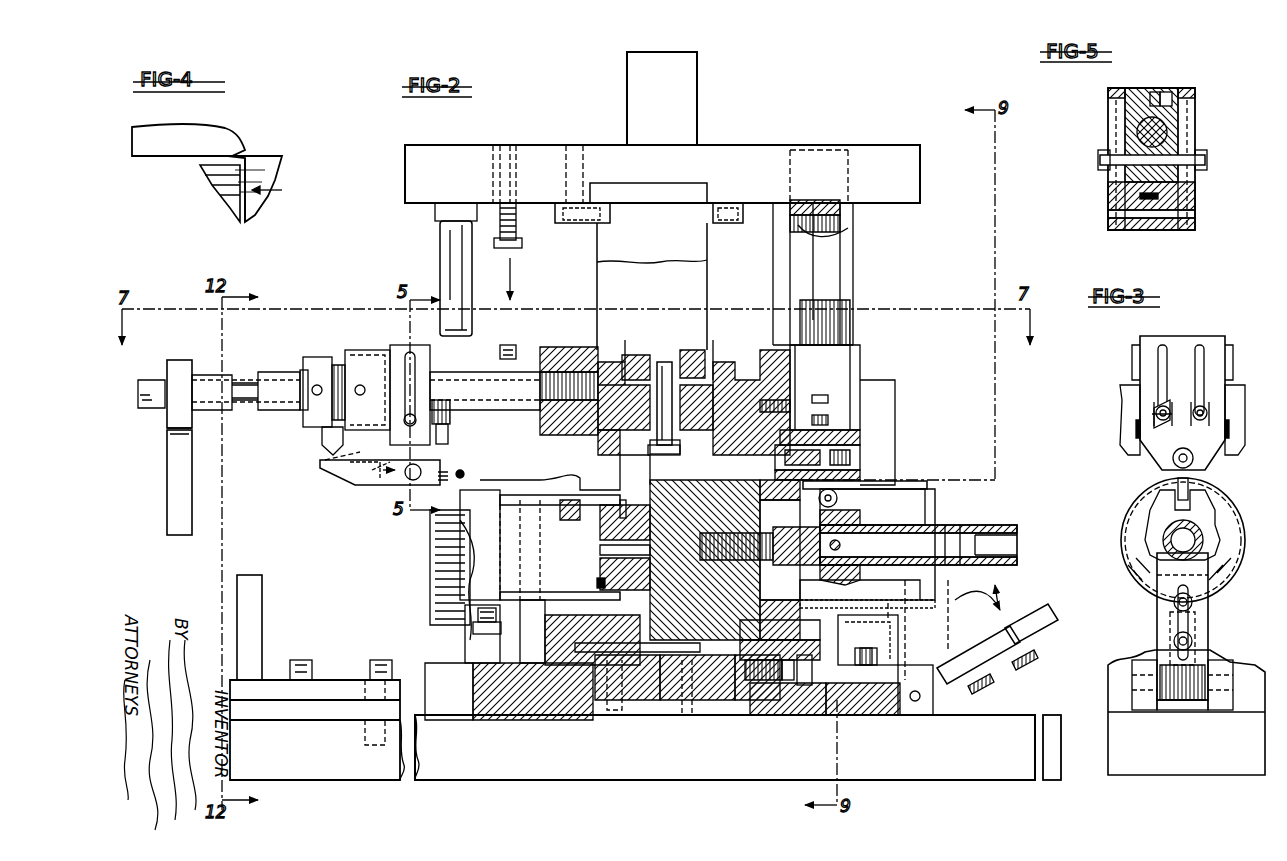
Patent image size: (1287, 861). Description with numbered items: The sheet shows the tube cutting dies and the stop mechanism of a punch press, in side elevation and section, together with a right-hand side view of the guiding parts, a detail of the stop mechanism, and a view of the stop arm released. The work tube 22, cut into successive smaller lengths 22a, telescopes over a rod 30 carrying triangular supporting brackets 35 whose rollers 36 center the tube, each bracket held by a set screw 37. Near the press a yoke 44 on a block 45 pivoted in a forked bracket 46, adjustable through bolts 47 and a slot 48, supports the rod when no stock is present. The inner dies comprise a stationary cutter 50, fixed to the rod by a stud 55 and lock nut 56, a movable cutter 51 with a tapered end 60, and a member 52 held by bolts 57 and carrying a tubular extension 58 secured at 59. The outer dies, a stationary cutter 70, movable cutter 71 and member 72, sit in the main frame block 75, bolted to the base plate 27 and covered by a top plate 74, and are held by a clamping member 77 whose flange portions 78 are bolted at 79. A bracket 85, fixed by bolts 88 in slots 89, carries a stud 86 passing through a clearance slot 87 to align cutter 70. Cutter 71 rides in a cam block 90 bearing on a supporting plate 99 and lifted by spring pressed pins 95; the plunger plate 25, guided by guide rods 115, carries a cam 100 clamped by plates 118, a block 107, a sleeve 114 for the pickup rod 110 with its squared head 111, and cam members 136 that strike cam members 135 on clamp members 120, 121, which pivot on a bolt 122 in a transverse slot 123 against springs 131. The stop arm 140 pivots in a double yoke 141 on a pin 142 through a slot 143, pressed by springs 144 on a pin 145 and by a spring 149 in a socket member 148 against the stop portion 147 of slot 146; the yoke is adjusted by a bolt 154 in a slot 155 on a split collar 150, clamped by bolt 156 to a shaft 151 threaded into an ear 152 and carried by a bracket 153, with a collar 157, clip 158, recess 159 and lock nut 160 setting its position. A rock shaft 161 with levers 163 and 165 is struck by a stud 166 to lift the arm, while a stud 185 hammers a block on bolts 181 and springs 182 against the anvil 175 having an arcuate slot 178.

In FIG. 3, the tube 22 is at (1125, 515).
In FIG. 2, the tube 22 is at (918, 482).
In FIG. 4, the smaller length 22a is at (262, 160).
In FIG. 2, the plate 25 is at (865, 145).
In FIG. 2, the base plate 27 is at (430, 782).
In FIG. 3, the rod 30 is at (1165, 540).
In FIG. 2, the rod 30 is at (1015, 525).
In FIG. 3, the supporting bracket 35 is at (1205, 500).
In FIG. 2, the supporting bracket 35 is at (850, 582).
In FIG. 3, the supporting roller 36 is at (1190, 487).
In FIG. 2, the supporting roller 36 is at (840, 500).
In FIG. 2, the set screw 37 is at (870, 515).
In FIG. 3, the yoke 44 is at (1208, 592).
In FIG. 2, the yoke 44 is at (945, 618).
In FIG. 3, the block 45 is at (1178, 710).
In FIG. 2, the block 45 is at (1020, 640).
In FIG. 3, the forked bracket 46 is at (1140, 705).
In FIG. 2, the forked bracket 46 is at (915, 718).
In FIG. 3, the bolt 47 is at (1192, 640).
In FIG. 2, the bolt 47 is at (1022, 672).
In FIG. 3, the slot 48 is at (1178, 612).
In FIG. 2, the stationary cutter 50 is at (770, 600).
In FIG. 2, the movable cutter 51 is at (600, 549).
In FIG. 2, the member 52 is at (600, 562).
In FIG. 2, the threaded bolt or stud 55 is at (740, 540).
In FIG. 2, the lock nut 56 is at (795, 568).
In FIG. 2, the elongated bolt 57 is at (597, 583).
In FIG. 4, the tubular extension 58 is at (215, 190).
In FIG. 2, the tubular extension 58 is at (515, 590).
In FIG. 2, the bolt 59 is at (618, 505).
In FIG. 2, the tapered end 60 is at (610, 488).
In FIG. 2, the stationary cutter 70 is at (690, 705).
In FIG. 2, the movable cutter 71 is at (640, 690).
In FIG. 2, the supporting member 72 is at (590, 655).
In FIG. 2, the top plate 74 is at (627, 340).
In FIG. 3, the main frame block 75 is at (1112, 680).
In FIG. 2, the main frame block 75 is at (742, 362).
In FIG. 2, the annular clamping member 77 is at (580, 458).
In FIG. 2, the flange portion 78 is at (522, 668).
In FIG. 2, the bolt 79 is at (470, 650).
In FIG. 3, the bracket 85 is at (1218, 340).
In FIG. 2, the bracket 85 is at (850, 438).
In FIG. 3, the threaded stud 86 is at (1173, 464).
In FIG. 2, the threaded stud 86 is at (860, 458).
In FIG. 2, the clearance slot 87 is at (775, 422).
In FIG. 3, the bolt 88 is at (1160, 405).
In FIG. 2, the bolt 88 is at (828, 420).
In FIG. 3, the slot 89 is at (1200, 350).
In FIG. 2, the slot 89 is at (805, 362).
In FIG. 2, the cam block 90 is at (608, 362).
In FIG. 2, the spring pressed pin 95 is at (687, 716).
In FIG. 2, the supporting plate 99 is at (742, 720).
In FIG. 2, the cam 100 is at (707, 270).
In FIG. 2, the block 107 is at (692, 350).
In FIG. 2, the rod 110 is at (660, 360).
In FIG. 2, the squared head 111 is at (683, 441).
In FIG. 2, the sleeve 114 is at (627, 93).
In FIG. 2, the guide rod 115 is at (843, 250).
In FIG. 2, the plate 118 is at (740, 205).
In FIG. 3, the clamp member 120 is at (1125, 410).
In FIG. 2, the clamp member 120 is at (780, 720).
In FIG. 3, the clamp member 121 is at (1240, 402).
In FIG. 2, the clamp member 121 is at (838, 745).
In FIG. 2, the bolt 122 is at (800, 688).
In FIG. 2, the transverse slot 123 is at (775, 690).
In FIG. 3, the spring 131 is at (1135, 430).
In FIG. 2, the cam member 135 is at (828, 397).
In FIG. 2, the cam member 136 is at (805, 270).
In FIG. 4, the stop arm 140 is at (213, 138).
In FIG. 5, the stop arm 140 is at (1158, 232).
In FIG. 2, the stop arm 140 is at (530, 505).
In FIG. 5, the double yoke 141 is at (1190, 190).
In FIG. 2, the double yoke 141 is at (370, 490).
In FIG. 5, the pin or bolt 142 is at (1195, 212).
In FIG. 2, the pin or bolt 142 is at (405, 480).
In FIG. 2, the slot 143 is at (395, 490).
In FIG. 2, the spring 144 is at (440, 482).
In FIG. 2, the pin 145 is at (462, 480).
In FIG. 5, the slot 146 is at (1140, 196).
In FIG. 2, the slot 146 is at (360, 478).
In FIG. 2, the stop portion 147 is at (340, 468).
In FIG. 2, the socket member 148 is at (450, 413).
In FIG. 2, the spring 149 is at (448, 431).
In FIG. 5, the split collar 150 is at (1178, 123).
In FIG. 2, the split collar 150 is at (487, 335).
In FIG. 5, the rod or shaft 151 is at (1140, 130).
In FIG. 2, the rod or shaft 151 is at (262, 372).
In FIG. 2, the ear 152 is at (562, 347).
In FIG. 2, the bracket 153 is at (170, 492).
In FIG. 5, the bolt 154 is at (1110, 158).
In FIG. 2, the bolt 154 is at (410, 380).
In FIG. 2, the slot 155 is at (508, 362).
In FIG. 5, the clamp bolt 156 is at (1158, 95).
In FIG. 2, the clamp bolt 156 is at (410, 355).
In FIG. 2, the collar 157 is at (305, 420).
In FIG. 2, the U-shaped clip 158 is at (302, 370).
In FIG. 2, the countersunk recess 159 is at (380, 350).
In FIG. 2, the lock nut 160 is at (358, 352).
In FIG. 2, the rock shaft 161 is at (245, 412).
In FIG. 2, the lever 163 is at (325, 448).
In FIG. 2, the lever 165 is at (515, 335).
In FIG. 2, the bolt or stud 166 is at (520, 238).
In FIG. 2, the anvil 175 is at (432, 555).
In FIG. 2, the arcuate slot 178 is at (432, 590).
In FIG. 2, the bolt 181 is at (473, 628).
In FIG. 2, the spring 182 is at (478, 612).
In FIG. 2, the stud 185 is at (450, 250).